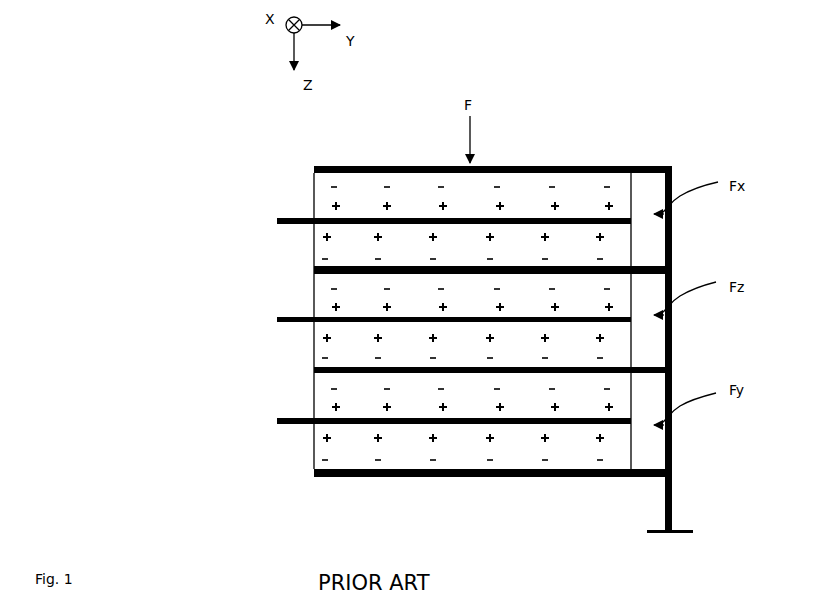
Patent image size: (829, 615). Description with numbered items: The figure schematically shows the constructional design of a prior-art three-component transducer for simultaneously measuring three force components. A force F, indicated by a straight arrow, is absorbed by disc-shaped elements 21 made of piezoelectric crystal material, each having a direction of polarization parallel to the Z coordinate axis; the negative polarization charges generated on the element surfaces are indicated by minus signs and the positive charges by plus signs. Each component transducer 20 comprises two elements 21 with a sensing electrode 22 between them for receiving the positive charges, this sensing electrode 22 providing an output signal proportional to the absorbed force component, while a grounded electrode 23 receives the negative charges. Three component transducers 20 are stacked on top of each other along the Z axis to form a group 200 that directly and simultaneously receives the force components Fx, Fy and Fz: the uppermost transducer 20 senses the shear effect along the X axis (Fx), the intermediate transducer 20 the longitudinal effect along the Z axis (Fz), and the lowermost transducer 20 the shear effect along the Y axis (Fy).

The group 200 is at (70, 150).
The component transducer 20 is at (139, 163).
The element 21 is at (318, 192).
The sensing electrode 22 is at (279, 220).
The electrode 23 is at (672, 500).